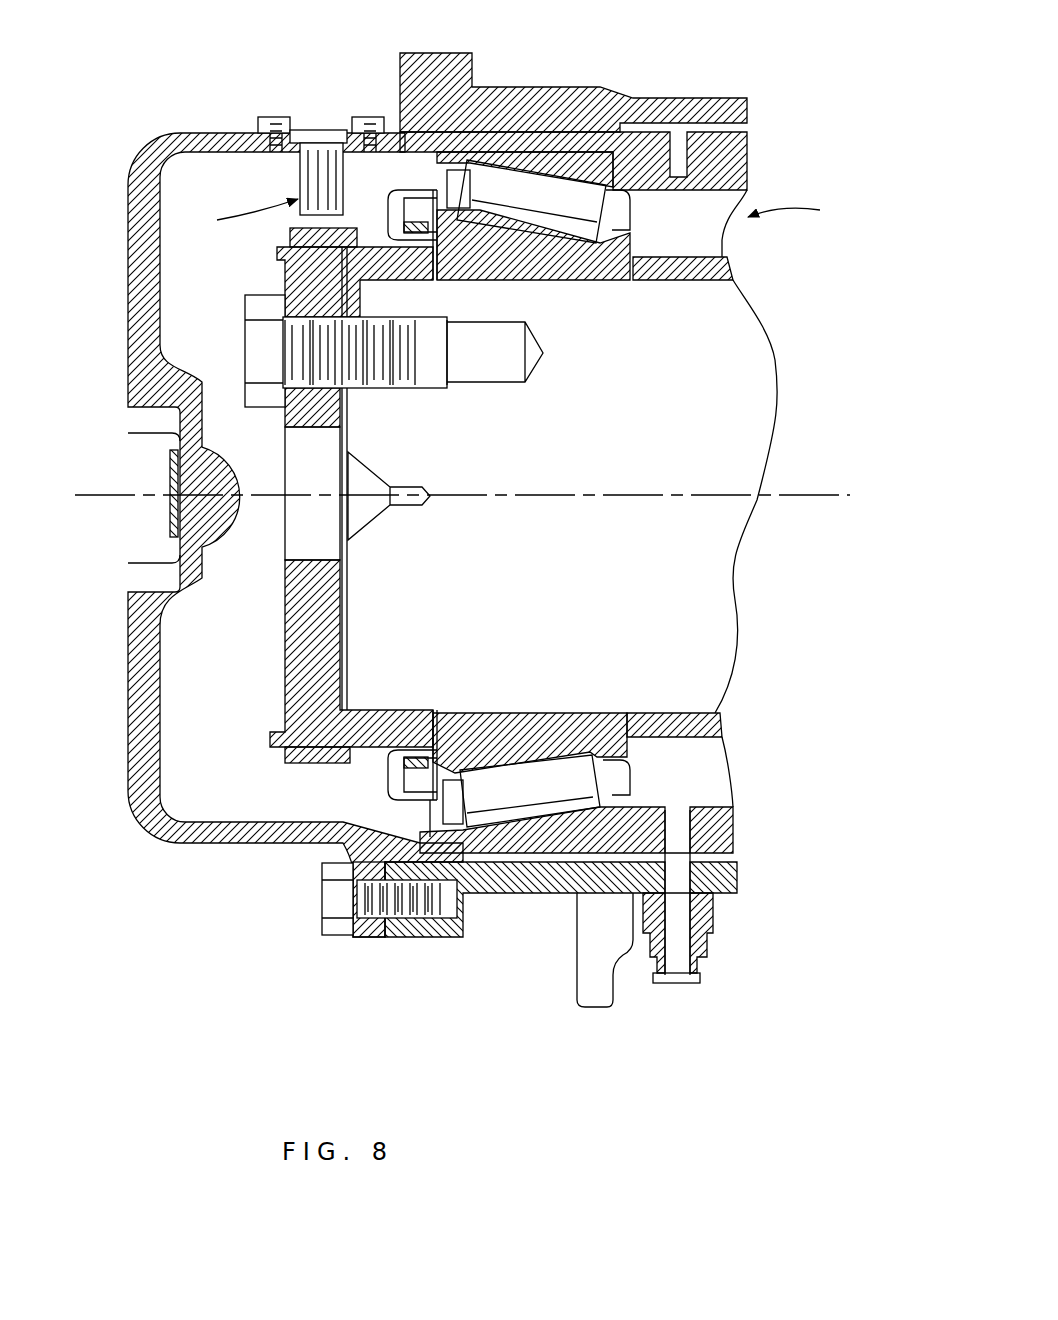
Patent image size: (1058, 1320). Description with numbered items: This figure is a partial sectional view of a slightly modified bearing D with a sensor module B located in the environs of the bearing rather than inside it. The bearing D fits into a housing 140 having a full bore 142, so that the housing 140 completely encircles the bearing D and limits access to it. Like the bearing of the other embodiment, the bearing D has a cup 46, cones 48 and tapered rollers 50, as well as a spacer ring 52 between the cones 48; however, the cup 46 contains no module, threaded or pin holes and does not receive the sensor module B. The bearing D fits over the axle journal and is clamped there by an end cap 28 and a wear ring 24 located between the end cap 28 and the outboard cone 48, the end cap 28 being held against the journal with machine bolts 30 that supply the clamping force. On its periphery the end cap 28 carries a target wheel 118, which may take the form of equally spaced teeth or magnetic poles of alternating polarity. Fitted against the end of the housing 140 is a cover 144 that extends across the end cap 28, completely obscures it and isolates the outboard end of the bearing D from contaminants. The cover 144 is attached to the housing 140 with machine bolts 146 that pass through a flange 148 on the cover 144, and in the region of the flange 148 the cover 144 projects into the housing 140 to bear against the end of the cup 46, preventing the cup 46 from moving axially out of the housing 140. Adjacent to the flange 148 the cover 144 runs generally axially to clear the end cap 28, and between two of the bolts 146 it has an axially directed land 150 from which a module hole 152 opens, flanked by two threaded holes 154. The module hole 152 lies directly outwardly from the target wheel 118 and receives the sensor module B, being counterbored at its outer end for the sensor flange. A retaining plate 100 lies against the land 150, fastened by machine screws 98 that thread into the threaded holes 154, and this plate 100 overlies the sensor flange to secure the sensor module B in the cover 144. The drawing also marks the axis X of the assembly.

The threaded holes 154 is at (258, 145).
The retaining plate 100 is at (294, 130).
The machine screws 98 is at (354, 118).
The housing 140 is at (637, 97).
The land 150 is at (290, 493).
The cup 46 is at (752, 157).
The bearing D is at (797, 211).
The module hole 152 is at (317, 170).
The sensor module B is at (246, 218).
The cones 48 is at (565, 283).
The spacer ring 52 is at (687, 283).
The machine bolts 30 is at (400, 390).
The axis X is at (462, 496).
The cover 144 is at (250, 493).
The end cap 28 is at (293, 680).
The tapered rollers 50 is at (523, 790).
The full bore 142 is at (620, 803).
The target wheel 118 is at (297, 764).
The wear ring 24 is at (363, 753).
The machine bolts 146 is at (335, 900).
The flange 148 is at (370, 940).